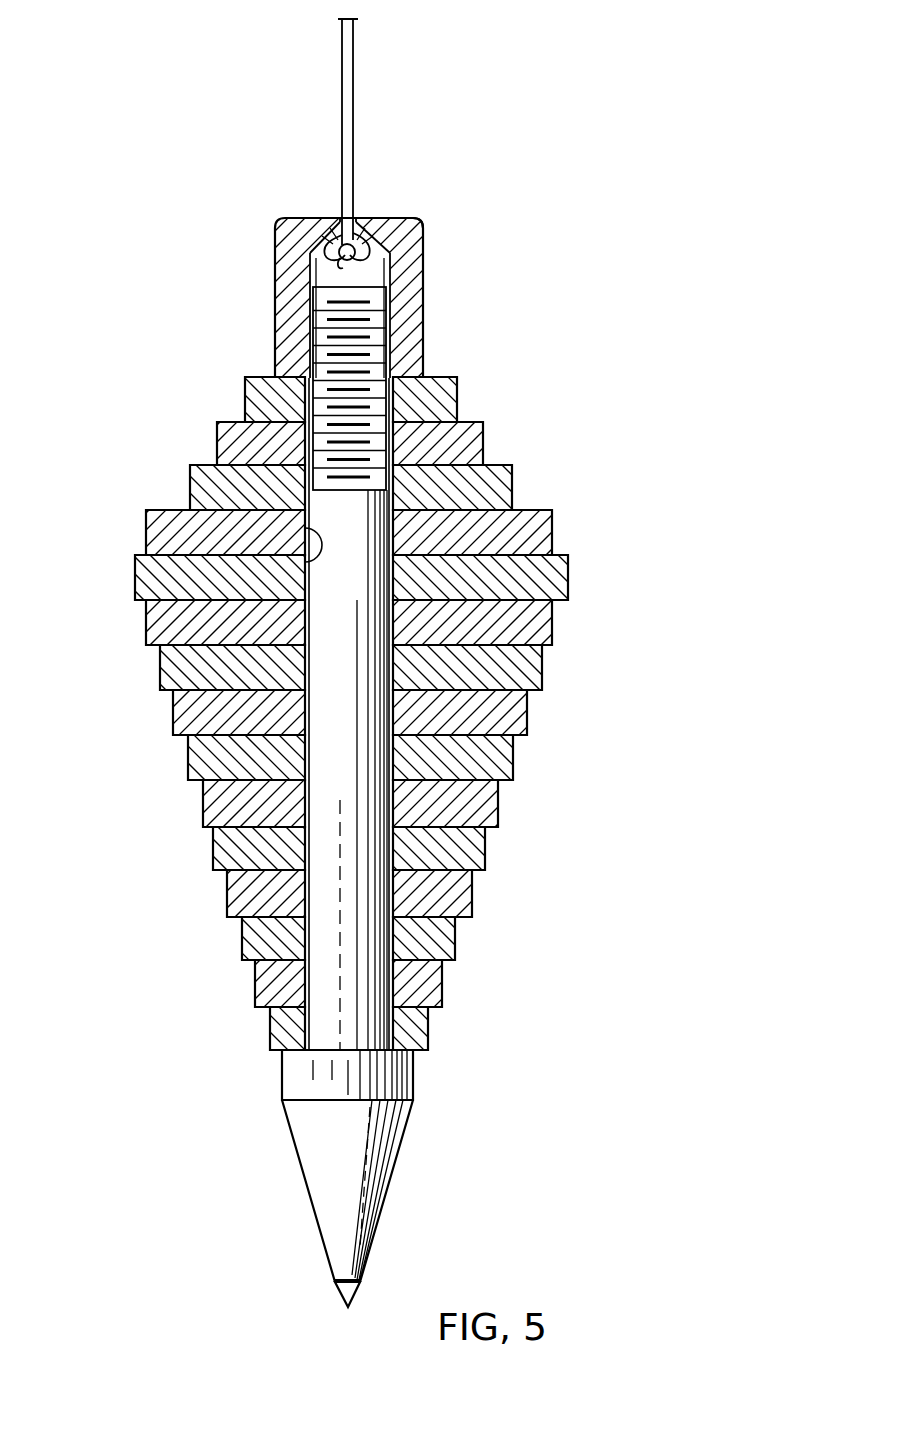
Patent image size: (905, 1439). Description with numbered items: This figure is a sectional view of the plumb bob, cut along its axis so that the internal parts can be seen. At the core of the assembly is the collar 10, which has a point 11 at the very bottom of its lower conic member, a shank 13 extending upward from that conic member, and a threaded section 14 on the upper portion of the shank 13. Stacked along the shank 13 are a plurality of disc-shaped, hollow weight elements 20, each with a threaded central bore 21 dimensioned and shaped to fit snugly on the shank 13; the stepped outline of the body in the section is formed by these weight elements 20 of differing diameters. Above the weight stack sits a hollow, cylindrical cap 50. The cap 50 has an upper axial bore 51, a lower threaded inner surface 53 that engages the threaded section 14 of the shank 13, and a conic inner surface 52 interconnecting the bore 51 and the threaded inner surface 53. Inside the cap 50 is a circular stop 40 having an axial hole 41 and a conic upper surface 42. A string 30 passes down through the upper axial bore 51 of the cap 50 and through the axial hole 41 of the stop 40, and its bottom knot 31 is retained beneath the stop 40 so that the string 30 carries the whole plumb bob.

The collar 10 is at (452, 783).
The point 11 is at (343, 1303).
The shank 13 is at (323, 732).
The threaded section 14 is at (357, 403).
The weight element 20 is at (147, 630).
The central bore 21 is at (310, 572).
The string 30 is at (356, 53).
The bottom knot 31 is at (340, 262).
The circular stop 40 is at (260, 280).
The axial hole 41 is at (342, 216).
The conic upper surface 42 is at (397, 217).
The cap 50 is at (350, 226).
The upper axial bore 51 is at (367, 217).
The conic inner surface 52 is at (300, 218).
The lower threaded inner surface 53 is at (367, 267).